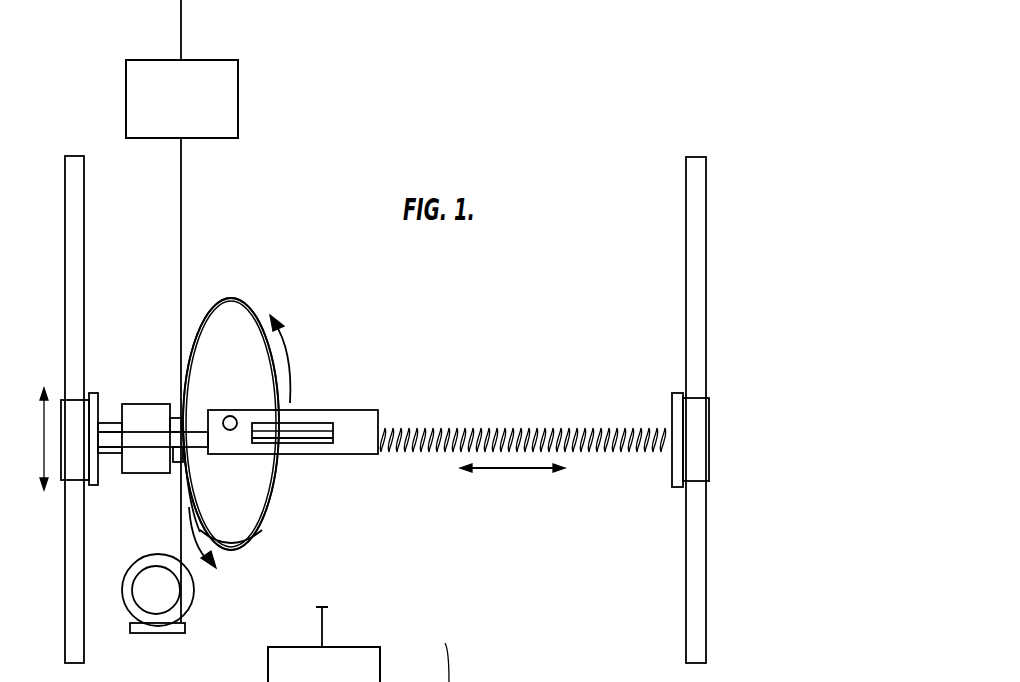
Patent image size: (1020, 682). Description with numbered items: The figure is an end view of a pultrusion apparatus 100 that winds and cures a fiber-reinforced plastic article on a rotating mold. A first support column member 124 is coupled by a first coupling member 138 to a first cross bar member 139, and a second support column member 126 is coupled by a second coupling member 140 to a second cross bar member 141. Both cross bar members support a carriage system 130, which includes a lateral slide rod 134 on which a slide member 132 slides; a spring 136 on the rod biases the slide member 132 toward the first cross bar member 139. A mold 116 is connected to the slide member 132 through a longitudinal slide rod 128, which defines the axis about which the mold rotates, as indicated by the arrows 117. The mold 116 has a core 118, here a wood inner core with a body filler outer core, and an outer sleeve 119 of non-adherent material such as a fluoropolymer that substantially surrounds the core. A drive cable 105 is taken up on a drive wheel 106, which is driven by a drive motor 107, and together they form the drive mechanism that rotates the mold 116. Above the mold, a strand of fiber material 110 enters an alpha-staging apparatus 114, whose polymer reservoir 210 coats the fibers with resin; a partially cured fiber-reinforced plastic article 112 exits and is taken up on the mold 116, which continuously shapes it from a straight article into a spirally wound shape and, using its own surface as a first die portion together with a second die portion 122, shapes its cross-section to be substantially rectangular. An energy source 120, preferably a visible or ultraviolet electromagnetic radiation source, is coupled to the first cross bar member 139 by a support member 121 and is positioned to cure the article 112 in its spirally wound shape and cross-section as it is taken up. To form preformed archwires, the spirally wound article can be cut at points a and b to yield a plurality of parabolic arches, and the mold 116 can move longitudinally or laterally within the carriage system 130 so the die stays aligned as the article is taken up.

The pultrusion apparatus 100 is at (730, 153).
The drive cable 105 is at (213, 515).
The drive wheel 106 is at (152, 620).
The drive motor 107 is at (190, 610).
The strand of fiber material 110 is at (350, 622).
The partially cured fiber-reinforced plastic article 112 is at (181, 192).
The alpha-staging apparatus 114 is at (238, 97).
The mold 116 is at (245, 300).
The arrows 117 is at (197, 549).
The core 118 is at (207, 318).
The outer sleeve 119 is at (248, 550).
The energy source 120 is at (133, 473).
The support member 121 is at (108, 423).
The second die portion 122 is at (176, 462).
The first support column member 124 is at (84, 253).
The second support column member 126 is at (706, 233).
The longitudinal slide rod 128 is at (235, 429).
The carriage system 130 is at (420, 474).
The slide member 132 is at (378, 412).
The lateral slide rod 134 is at (300, 447).
The spring 136 is at (552, 427).
The first coupling member 138 is at (61, 400).
The first cross bar member 139 is at (98, 393).
The second coupling member 140 is at (709, 417).
The second cross bar member 141 is at (673, 397).
The polymer reservoir 210 is at (380, 670).
The cutting point a is at (172, 428).
The cutting point b is at (282, 430).